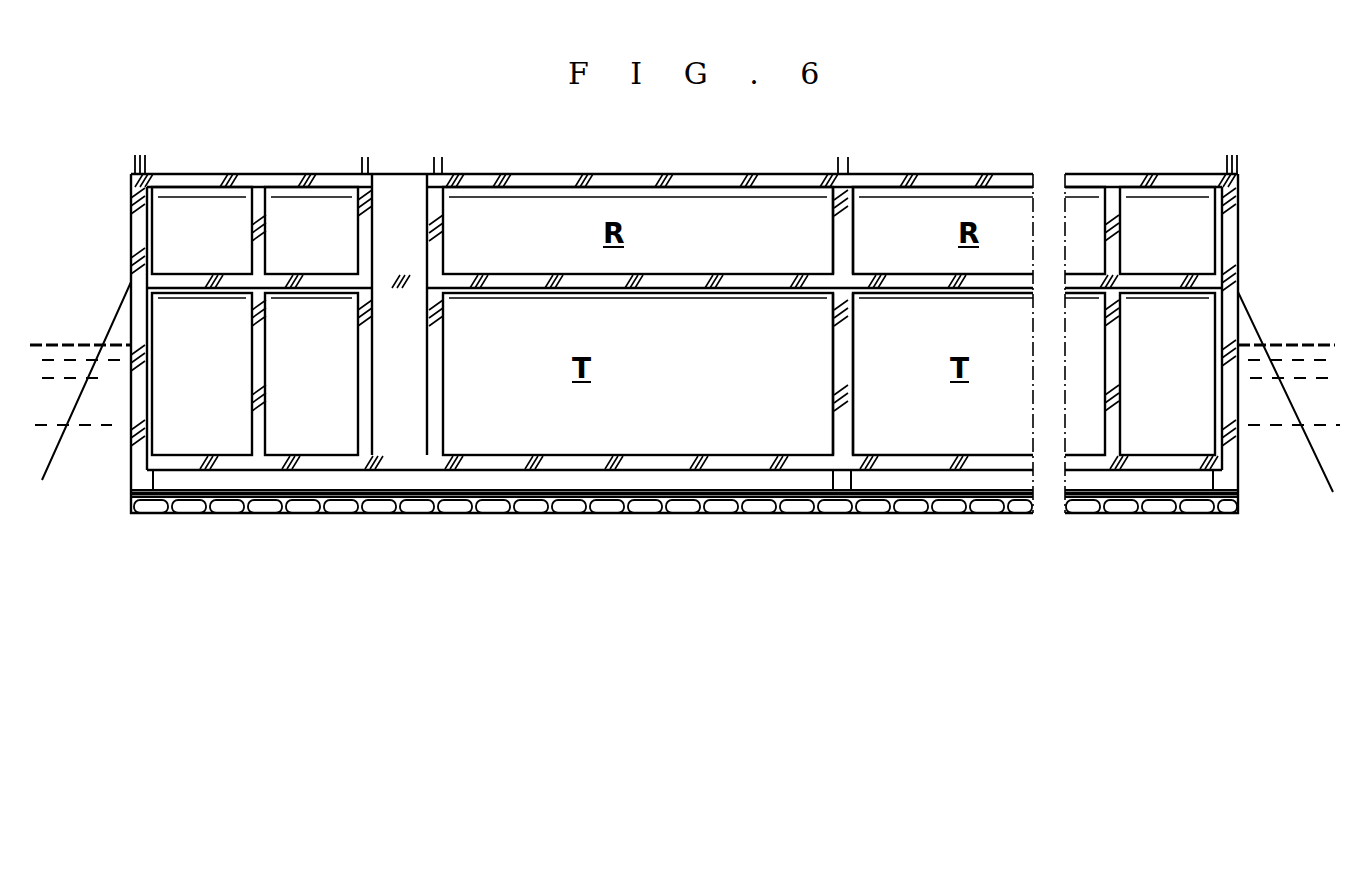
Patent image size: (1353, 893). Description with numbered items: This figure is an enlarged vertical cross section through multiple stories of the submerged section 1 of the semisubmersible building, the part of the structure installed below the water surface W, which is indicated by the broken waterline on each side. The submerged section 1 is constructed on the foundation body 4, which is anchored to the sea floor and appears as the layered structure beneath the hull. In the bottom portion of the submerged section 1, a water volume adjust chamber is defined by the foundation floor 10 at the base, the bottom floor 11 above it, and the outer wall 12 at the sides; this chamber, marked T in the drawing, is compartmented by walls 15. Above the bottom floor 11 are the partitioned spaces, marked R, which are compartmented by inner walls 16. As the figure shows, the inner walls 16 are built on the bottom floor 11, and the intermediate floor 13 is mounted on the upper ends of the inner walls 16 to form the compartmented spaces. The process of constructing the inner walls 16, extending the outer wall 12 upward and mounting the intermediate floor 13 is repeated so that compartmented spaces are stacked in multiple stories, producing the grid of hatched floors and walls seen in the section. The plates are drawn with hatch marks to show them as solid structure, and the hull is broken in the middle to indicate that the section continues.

The submerged section 1 is at (1253, 213).
The foundation body 4 is at (128, 511).
The foundation floor 10 is at (663, 454).
The bottom floor 11 is at (712, 273).
The outer wall 12 is at (137, 232).
The intermediate floor 13 is at (688, 175).
The wall 15 is at (852, 400).
The inner wall 16 is at (846, 238).
The water surface W is at (67, 340).